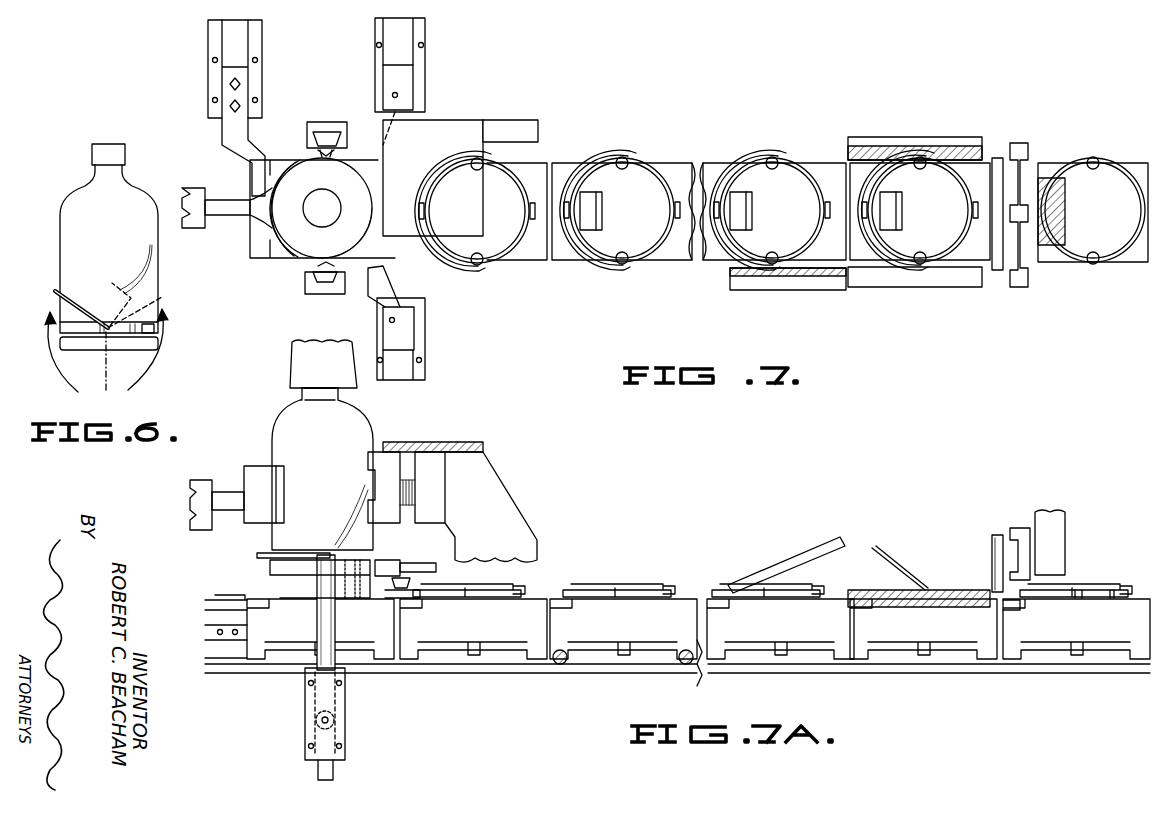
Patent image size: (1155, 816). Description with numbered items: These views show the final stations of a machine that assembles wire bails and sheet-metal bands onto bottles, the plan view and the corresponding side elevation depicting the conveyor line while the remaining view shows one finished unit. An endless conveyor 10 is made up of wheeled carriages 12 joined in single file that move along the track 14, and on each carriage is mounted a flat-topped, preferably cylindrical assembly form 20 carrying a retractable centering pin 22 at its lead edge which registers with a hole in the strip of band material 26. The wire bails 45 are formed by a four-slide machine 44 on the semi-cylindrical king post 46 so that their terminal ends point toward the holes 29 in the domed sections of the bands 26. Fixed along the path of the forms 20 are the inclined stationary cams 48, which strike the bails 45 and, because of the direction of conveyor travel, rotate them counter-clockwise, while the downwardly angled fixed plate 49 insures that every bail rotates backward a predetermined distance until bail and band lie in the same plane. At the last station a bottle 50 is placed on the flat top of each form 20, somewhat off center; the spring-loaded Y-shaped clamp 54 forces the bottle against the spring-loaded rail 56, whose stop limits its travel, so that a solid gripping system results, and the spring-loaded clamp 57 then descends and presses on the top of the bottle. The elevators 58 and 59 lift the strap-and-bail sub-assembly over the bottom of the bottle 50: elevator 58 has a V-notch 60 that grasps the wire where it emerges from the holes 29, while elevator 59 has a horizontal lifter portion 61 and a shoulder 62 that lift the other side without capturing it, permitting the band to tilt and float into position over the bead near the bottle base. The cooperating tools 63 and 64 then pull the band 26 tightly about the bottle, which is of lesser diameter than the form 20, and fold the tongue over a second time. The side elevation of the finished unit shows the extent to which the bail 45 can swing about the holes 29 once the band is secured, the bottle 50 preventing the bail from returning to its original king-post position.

In FIG. 7, the endless conveyor 10 is at (656, 265).
In FIG. 7A, the endless conveyor 10 is at (514, 678).
In FIG. 7, the wheeled carriage 12 is at (560, 262).
In FIG. 7A, the wheeled carriage 12 is at (440, 658).
In FIG. 7A, the track 14 is at (600, 670).
In FIG. 7, the assembly form 20 is at (640, 162).
In FIG. 7A, the assembly form 20 is at (1105, 588).
In FIG. 7, the retractable centering pin 22 is at (575, 213).
In FIG. 7A, the retractable centering pin 22 is at (1018, 601).
In FIG. 6, the band material 26 is at (88, 336).
In FIG. 6, the hole 29 is at (110, 334).
In FIG. 7A, the hole 29 is at (1080, 590).
In FIG. 7, the four-slide machine 44 is at (1066, 188).
In FIG. 7A, the four-slide machine 44 is at (1068, 519).
In FIG. 6, the wire bail 45 is at (70, 300).
In FIG. 7, the wire bail 45 is at (752, 158).
In FIG. 7A, the wire bail 45 is at (990, 541).
In FIG. 7, the king post 46 is at (1022, 180).
In FIG. 7A, the king post 46 is at (1018, 528).
In FIG. 7, the inclined stationary cam 48 is at (940, 150).
In FIG. 7A, the inclined stationary cam 48 is at (868, 586).
In FIG. 7, the fixed plate 49 is at (772, 274).
In FIG. 7A, the fixed plate 49 is at (770, 563).
In FIG. 6, the bottle 50 is at (62, 245).
In FIG. 7A, the bottle 50 is at (322, 469).
In FIG. 7, the Y-shaped clamp 54 is at (245, 226).
In FIG. 7A, the Y-shaped clamp 54 is at (258, 466).
In FIG. 7, the rail 56 is at (385, 204).
In FIG. 7A, the rail 56 is at (384, 443).
In FIG. 7A, the clamp 57 is at (292, 364).
In FIG. 7, the elevator 58 is at (304, 279).
In FIG. 7A, the elevator 58 is at (332, 624).
In FIG. 7, the elevator 59 is at (314, 146).
In FIG. 7, the V-notch 60 is at (321, 208).
In FIG. 7A, the V-notch 60 is at (318, 562).
In FIG. 7, the horizontal lifter portion 61 is at (318, 153).
In FIG. 7, the shoulder 62 is at (330, 153).
In FIG. 7, the cooperating tool 63 is at (374, 120).
In FIG. 7, the cooperating tool 64 is at (375, 300).
In FIG. 7A, the cooperating tool 64 is at (378, 562).